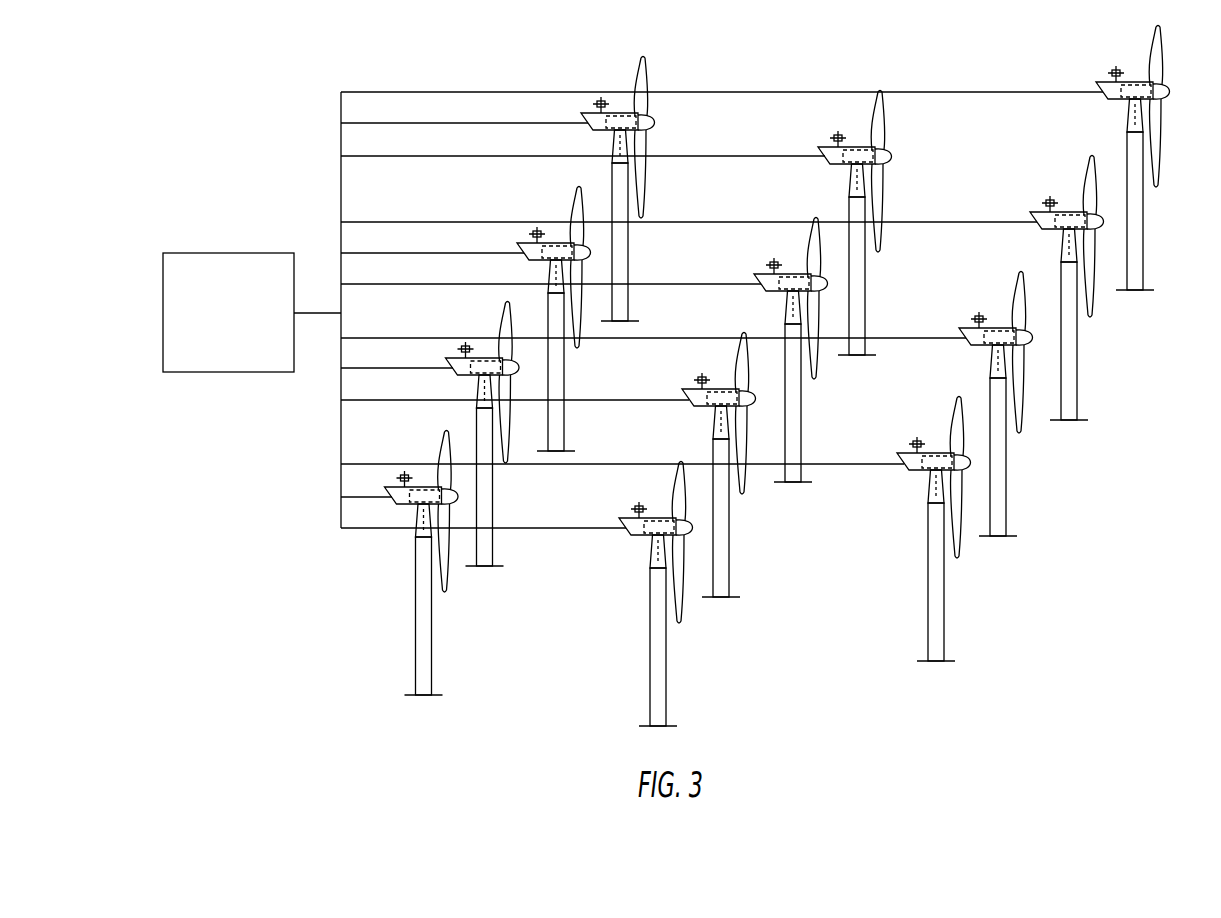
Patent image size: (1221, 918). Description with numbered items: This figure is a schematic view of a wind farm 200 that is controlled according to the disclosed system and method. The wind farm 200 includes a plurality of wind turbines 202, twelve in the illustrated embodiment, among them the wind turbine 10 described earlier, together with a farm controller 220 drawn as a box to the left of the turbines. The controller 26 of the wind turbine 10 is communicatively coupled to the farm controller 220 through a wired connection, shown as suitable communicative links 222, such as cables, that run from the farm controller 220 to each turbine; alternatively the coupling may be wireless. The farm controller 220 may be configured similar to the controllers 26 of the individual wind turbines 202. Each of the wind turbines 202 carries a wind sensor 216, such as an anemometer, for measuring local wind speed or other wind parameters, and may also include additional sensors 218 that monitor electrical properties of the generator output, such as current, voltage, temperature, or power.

The wind farm 200 is at (250, 138).
The farm controller 220 is at (244, 320).
The communicative links 222 is at (463, 220).
The wind turbine 10 is at (395, 559).
The controller 26 is at (422, 492).
The wind turbines 202 is at (735, 514).
The wind sensor 216 is at (633, 510).
The additional sensors 218 is at (651, 558).